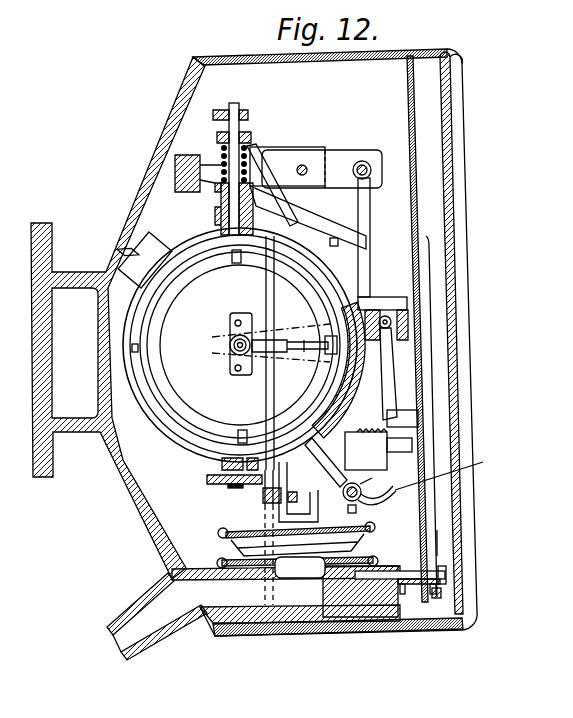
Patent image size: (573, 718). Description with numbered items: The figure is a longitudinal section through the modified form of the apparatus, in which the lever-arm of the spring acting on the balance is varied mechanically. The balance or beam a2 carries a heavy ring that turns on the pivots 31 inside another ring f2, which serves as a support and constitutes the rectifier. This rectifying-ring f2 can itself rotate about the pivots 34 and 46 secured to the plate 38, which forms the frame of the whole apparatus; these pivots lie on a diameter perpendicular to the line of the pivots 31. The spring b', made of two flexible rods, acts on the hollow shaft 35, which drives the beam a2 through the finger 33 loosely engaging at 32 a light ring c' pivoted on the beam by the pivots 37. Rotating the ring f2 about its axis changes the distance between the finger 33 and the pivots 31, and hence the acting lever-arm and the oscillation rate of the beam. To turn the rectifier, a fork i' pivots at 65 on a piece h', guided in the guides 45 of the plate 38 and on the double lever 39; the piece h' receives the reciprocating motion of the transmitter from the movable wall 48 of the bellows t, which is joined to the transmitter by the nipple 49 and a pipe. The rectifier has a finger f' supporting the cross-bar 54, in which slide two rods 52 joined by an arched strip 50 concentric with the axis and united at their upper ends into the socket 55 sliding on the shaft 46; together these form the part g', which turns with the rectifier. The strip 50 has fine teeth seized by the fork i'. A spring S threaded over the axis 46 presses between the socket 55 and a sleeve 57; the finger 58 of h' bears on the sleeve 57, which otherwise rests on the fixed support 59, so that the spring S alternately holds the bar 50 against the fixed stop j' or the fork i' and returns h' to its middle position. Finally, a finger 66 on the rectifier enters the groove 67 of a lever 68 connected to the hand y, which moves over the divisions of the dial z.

The pivots 31 is at (132, 348).
The engagement point 32 is at (327, 341).
The finger 33 is at (305, 353).
The pivot 34 is at (240, 481).
The hollow shaft 35 is at (229, 349).
The pivots 37 is at (235, 265).
The plate 38 is at (266, 518).
The double lever 39 is at (345, 160).
The guides 45 is at (302, 489).
The pivot (fixed axis) 46 is at (222, 218).
The movable wall 48 is at (218, 533).
The nipple 49 is at (135, 650).
The arched strip (toothed bar) 50 is at (388, 452).
The rods 52 is at (342, 512).
The cross-bar 54 is at (344, 492).
The socket (sleeve) 55 is at (217, 137).
The sleeve 57 is at (222, 196).
The finger 58 is at (252, 188).
The fixed support 59 is at (282, 218).
The pivot 65 is at (408, 330).
The finger 66 is at (449, 469).
The groove 67 is at (368, 482).
The lever 68 is at (393, 496).
The spring S is at (211, 168).
The balance or beam a2 is at (177, 268).
The spring b' is at (218, 351).
The light ring c' is at (279, 353).
The rectifying-ring f2 is at (163, 420).
The finger of the rectifying-ring f' is at (476, 417).
The sliding toothed part g' is at (349, 386).
The piece (member) h' is at (382, 244).
The fork i' is at (394, 374).
The fixed part (fixed stop) j' is at (442, 414).
The dial z is at (416, 204).
The hand y is at (441, 539).
The bellows t is at (371, 532).